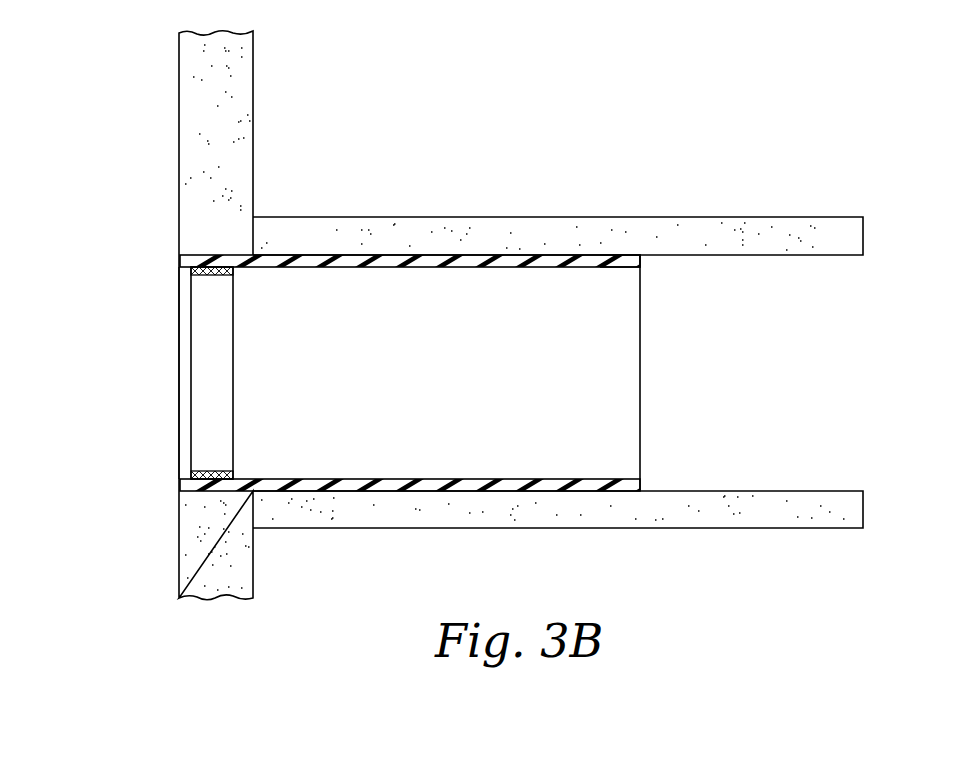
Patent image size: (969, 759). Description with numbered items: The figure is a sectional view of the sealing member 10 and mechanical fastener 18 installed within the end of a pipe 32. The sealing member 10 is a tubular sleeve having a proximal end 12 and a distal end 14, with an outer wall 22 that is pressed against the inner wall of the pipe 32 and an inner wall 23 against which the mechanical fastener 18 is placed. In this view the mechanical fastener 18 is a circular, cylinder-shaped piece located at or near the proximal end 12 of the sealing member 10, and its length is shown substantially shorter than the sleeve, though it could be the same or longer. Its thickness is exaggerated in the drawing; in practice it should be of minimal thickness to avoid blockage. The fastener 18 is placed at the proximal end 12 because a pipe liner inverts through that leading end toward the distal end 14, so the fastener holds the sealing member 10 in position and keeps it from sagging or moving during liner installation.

The sealing member 10 is at (183, 370).
The proximal end 12 is at (143, 316).
The distal end 14 is at (641, 372).
The mechanical fastener 18 is at (222, 337).
The outer wall 22 is at (422, 255).
The inner wall 23 is at (613, 264).
The pipe 32 is at (744, 217).